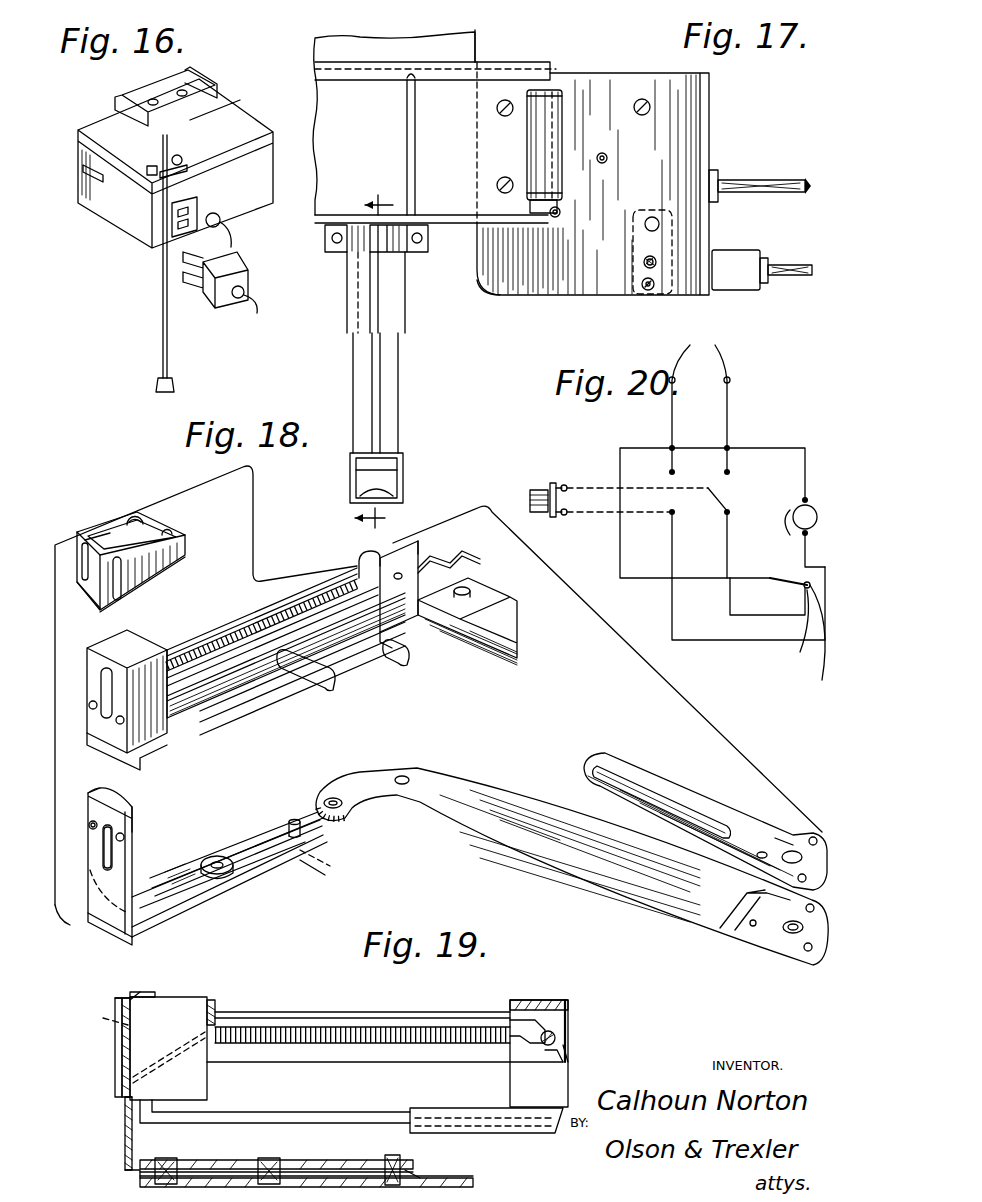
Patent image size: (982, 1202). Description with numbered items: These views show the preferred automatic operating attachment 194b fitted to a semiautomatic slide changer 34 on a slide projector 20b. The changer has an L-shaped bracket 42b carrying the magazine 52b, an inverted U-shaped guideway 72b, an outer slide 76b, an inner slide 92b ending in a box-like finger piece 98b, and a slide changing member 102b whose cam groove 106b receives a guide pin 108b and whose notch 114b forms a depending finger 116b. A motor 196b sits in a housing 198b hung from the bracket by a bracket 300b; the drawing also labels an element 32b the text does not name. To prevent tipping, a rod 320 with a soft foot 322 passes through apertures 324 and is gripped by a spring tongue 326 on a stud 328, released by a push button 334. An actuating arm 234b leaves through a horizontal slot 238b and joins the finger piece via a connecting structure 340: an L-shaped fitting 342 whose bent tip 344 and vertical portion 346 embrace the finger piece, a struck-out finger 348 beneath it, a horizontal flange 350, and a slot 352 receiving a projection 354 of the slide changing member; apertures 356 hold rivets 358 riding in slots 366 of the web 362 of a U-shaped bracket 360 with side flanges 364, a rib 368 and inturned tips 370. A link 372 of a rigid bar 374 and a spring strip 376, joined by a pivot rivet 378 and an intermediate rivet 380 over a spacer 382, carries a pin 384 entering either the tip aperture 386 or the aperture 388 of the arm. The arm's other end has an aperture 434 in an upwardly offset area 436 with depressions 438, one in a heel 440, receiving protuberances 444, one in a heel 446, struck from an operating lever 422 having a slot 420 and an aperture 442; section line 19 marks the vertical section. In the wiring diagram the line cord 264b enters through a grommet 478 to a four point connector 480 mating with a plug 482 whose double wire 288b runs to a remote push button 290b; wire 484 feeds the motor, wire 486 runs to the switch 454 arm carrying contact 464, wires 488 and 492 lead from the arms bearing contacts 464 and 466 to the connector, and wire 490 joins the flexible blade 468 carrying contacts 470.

In FIG. 16, the automatic operating attachment 194b is at (127, 258).
In FIG. 17, the automatic operating attachment 194b is at (718, 130).
In FIG. 16, the horizontal slot 238b is at (102, 180).
In FIG. 16, the bracket 300b is at (165, 93).
In FIG. 17, the bracket 300b is at (553, 103).
In FIG. 16, the housing 198b is at (213, 113).
In FIG. 17, the housing 198b is at (516, 298).
In FIG. 16, the push button 334 is at (148, 166).
In FIG. 17, the push button 334 is at (648, 289).
In FIG. 16, the spring metal tongue 326 is at (182, 159).
In FIG. 17, the spring metal tongue 326 is at (642, 250).
In FIG. 16, the aligned apertures 324 is at (189, 168).
In FIG. 16, the female receptacle connector 480 is at (199, 213).
In FIG. 20, the female receptacle connector 480 is at (724, 465).
In FIG. 16, the line cord 264b is at (221, 219).
In FIG. 17, the line cord 264b is at (780, 178).
In FIG. 20, the line cord 264b is at (705, 399).
In FIG. 16, the male plug connector 482 is at (232, 268).
In FIG. 17, the male plug connector 482 is at (738, 258).
In FIG. 16, the double wire 288b is at (250, 289).
In FIG. 17, the double wire 288b is at (800, 256).
In FIG. 20, the double wire 288b is at (584, 515).
In FIG. 16, the metal rod 320 is at (162, 336).
In FIG. 17, the metal rod 320 is at (644, 265).
In FIG. 16, the tip or foot 322 is at (158, 383).
In FIG. 17, the L-shaped bracket 42b is at (345, 60).
In FIG. 18, the L-shaped bracket 42b is at (518, 633).
In FIG. 17, the magazine 52b is at (385, 90).
In FIG. 17, the slide projector 20b is at (480, 48).
In FIG. 17, the stud 328 is at (650, 215).
In FIG. 17, the rubber grommet 478 is at (718, 178).
In FIG. 17, the inverted U-shaped guideway 72b is at (378, 262).
In FIG. 18, the inverted U-shaped guideway 72b is at (410, 548).
In FIG. 19, the inverted U-shaped guideway 72b is at (545, 1088).
In FIG. 17, the semiautomatic slide changer 34 is at (332, 268).
In FIG. 17, the track 32b is at (477, 290).
In FIG. 17, the slide changing member 102b is at (372, 378).
In FIG. 18, the slide changing member 102b is at (275, 635).
In FIG. 19, the slide changing member 102b is at (310, 1048).
In FIG. 17, the inner slide 92b is at (398, 391).
In FIG. 18, the inner slide 92b is at (255, 697).
In FIG. 19, the inner slide 92b is at (215, 1118).
In FIG. 17, the section line 19 is at (388, 363).
In FIG. 17, the vertical rib 368 is at (355, 500).
In FIG. 18, the vertical rib 368 is at (100, 530).
In FIG. 19, the vertical rib 368 is at (128, 995).
In FIG. 17, the inwardly directed tips 370 is at (360, 455).
In FIG. 18, the inwardly directed tips 370 is at (150, 518).
In FIG. 17, the finger piece 98b is at (385, 475).
In FIG. 18, the finger piece 98b is at (150, 652).
In FIG. 19, the finger piece 98b is at (195, 1010).
In FIG. 18, the struck out finger 348 is at (205, 713).
In FIG. 19, the struck out finger 348 is at (138, 1098).
In FIG. 18, the notch 114b is at (475, 555).
In FIG. 19, the notch 114b is at (560, 1045).
In FIG. 18, the outer slide 76b is at (347, 660).
In FIG. 18, the cam groove 106b is at (325, 600).
In FIG. 19, the cam groove 106b is at (445, 1030).
In FIG. 18, the guide pin 108b is at (400, 572).
In FIG. 19, the guide pin 108b is at (548, 1030).
In FIG. 18, the depending finger 116b is at (470, 573).
In FIG. 19, the depending finger 116b is at (570, 1062).
In FIG. 18, the projection 354 is at (108, 735).
In FIG. 18, the side flanges 364 is at (130, 530).
In FIG. 19, the side flanges 364 is at (168, 995).
In FIG. 18, the vertically elongated slots 366 is at (82, 558).
In FIG. 18, the web 362 is at (120, 597).
In FIG. 18, the U-shaped attachment bracket 360 is at (87, 594).
In FIG. 19, the U-shaped attachment bracket 360 is at (114, 1050).
In FIG. 18, the L-shaped fitting 342 is at (141, 871).
In FIG. 19, the L-shaped fitting 342 is at (124, 1142).
In FIG. 18, the bent over upper tip 344 is at (133, 796).
In FIG. 19, the bent over upper tip 344 is at (148, 990).
In FIG. 18, the vertical portion 346 is at (135, 834).
In FIG. 19, the vertical portion 346 is at (128, 1100).
In FIG. 18, the pair of apertures 356 is at (90, 822).
In FIG. 18, the vertically elongated slot 352 is at (103, 847).
In FIG. 18, the horizontal flange 350 is at (160, 918).
In FIG. 19, the horizontal flange 350 is at (132, 1172).
In FIG. 18, the connecting structure 340 is at (268, 888).
In FIG. 19, the connecting structure 340 is at (374, 1157).
In FIG. 18, the flat metal bar 374 is at (278, 818).
In FIG. 19, the flat metal bar 374 is at (228, 1150).
In FIG. 18, the link 372 is at (249, 828).
In FIG. 19, the link 372 is at (334, 1157).
In FIG. 18, the intermediate rivet 380 is at (220, 856).
In FIG. 19, the intermediate rivet 380 is at (295, 1155).
In FIG. 18, the spacer 382 is at (272, 838).
In FIG. 19, the spacer 382 is at (275, 1160).
In FIG. 18, the rivet 378 is at (180, 903).
In FIG. 19, the rivet 378 is at (175, 1150).
In FIG. 18, the actuating arm 234b is at (505, 830).
In FIG. 18, the aperture 388 is at (402, 775).
In FIG. 18, the aperture 386 is at (340, 808).
In FIG. 18, the pin 384 is at (336, 861).
In FIG. 19, the pin 384 is at (412, 1170).
In FIG. 18, the spring steel strip 376 is at (312, 880).
In FIG. 19, the spring steel strip 376 is at (440, 1182).
In FIG. 18, the depressions 438 is at (745, 890).
In FIG. 18, the upwardly offset area 436 is at (783, 930).
In FIG. 18, the aperture 434 is at (805, 950).
In FIG. 18, the heel 440 is at (818, 912).
In FIG. 18, the elongated slot 420 is at (612, 760).
In FIG. 18, the operating lever 422 is at (660, 775).
In FIG. 18, the aperture 442 is at (790, 850).
In FIG. 18, the protuberances 444 is at (828, 845).
In FIG. 18, the heel 446 is at (812, 838).
In FIG. 20, the wire 484 is at (790, 455).
In FIG. 20, the push button 290b is at (540, 488).
In FIG. 20, the wire 490 is at (650, 552).
In FIG. 20, the electric motor 196b is at (790, 508).
In FIG. 20, the contact 464 is at (808, 560).
In FIG. 20, the wire 486 is at (788, 512).
In FIG. 20, the switch 454 is at (786, 574).
In FIG. 20, the flexible switch arm 468 is at (803, 588).
In FIG. 20, the wire 492 is at (728, 600).
In FIG. 20, the wire 488 is at (735, 641).
In FIG. 20, the contact 466 is at (803, 635).
In FIG. 20, the contacts 470 is at (801, 643).
In FIG. 19, the rivets 358 is at (95, 1012).